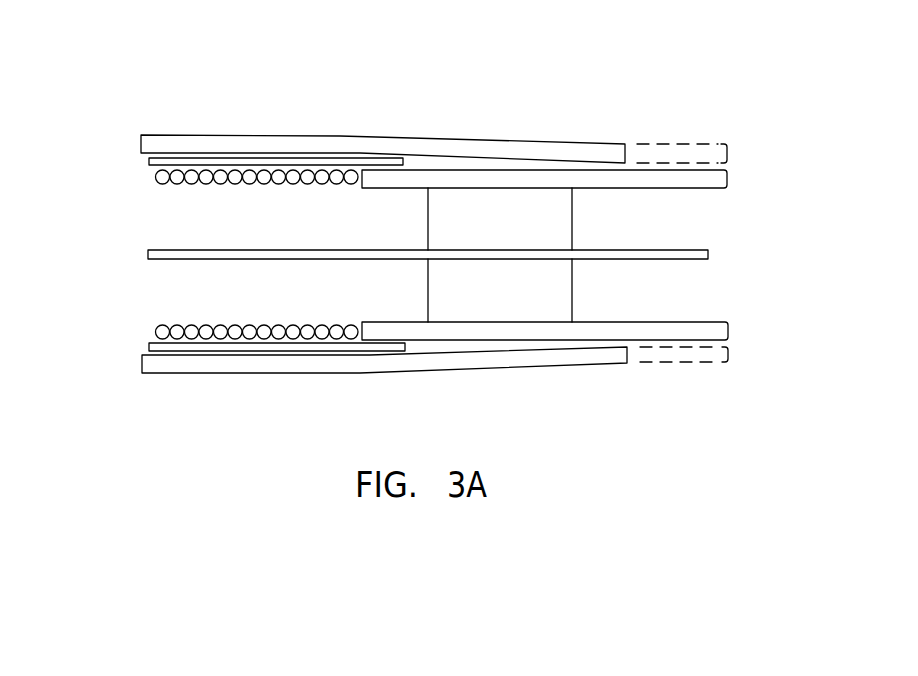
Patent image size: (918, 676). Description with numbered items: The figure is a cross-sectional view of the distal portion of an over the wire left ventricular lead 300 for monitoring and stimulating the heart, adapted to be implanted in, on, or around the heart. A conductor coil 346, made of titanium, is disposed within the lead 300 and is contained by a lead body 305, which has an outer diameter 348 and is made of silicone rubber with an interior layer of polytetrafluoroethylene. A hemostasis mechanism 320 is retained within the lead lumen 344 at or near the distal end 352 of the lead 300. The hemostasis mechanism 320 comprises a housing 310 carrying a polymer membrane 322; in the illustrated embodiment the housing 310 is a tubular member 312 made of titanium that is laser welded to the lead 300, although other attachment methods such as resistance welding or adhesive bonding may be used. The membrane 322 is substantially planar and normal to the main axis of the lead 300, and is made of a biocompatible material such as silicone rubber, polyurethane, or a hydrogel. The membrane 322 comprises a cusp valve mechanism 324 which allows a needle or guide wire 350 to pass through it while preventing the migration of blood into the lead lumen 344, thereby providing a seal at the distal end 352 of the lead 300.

The lead 300 is at (495, 72).
The lead body 305 is at (184, 134).
The housing 310 is at (377, 178).
The tubular member 312 is at (396, 179).
The polymer membrane 322 is at (492, 198).
The hemostasis mechanism 320 is at (550, 198).
The cusp valve mechanism 324 is at (605, 228).
The conductor coil 346 is at (150, 185).
The lead lumen 344 is at (222, 298).
The guide wire 350 is at (633, 260).
The outer diameter 348 is at (193, 375).
The distal end 352 is at (545, 383).